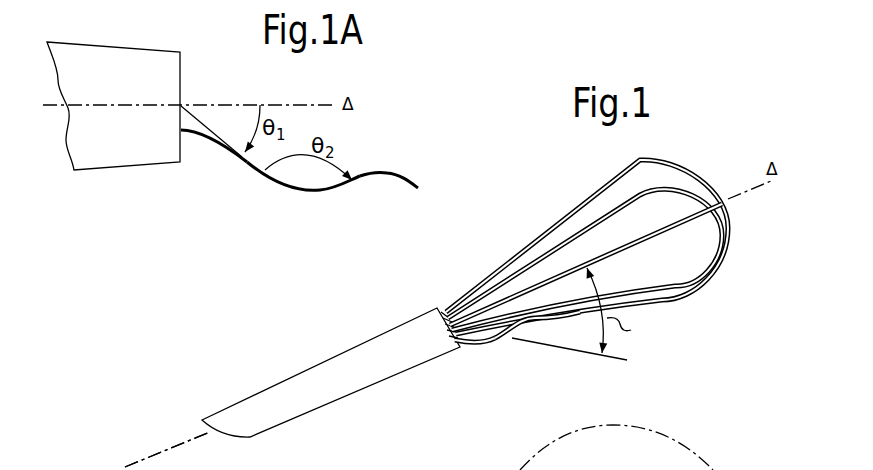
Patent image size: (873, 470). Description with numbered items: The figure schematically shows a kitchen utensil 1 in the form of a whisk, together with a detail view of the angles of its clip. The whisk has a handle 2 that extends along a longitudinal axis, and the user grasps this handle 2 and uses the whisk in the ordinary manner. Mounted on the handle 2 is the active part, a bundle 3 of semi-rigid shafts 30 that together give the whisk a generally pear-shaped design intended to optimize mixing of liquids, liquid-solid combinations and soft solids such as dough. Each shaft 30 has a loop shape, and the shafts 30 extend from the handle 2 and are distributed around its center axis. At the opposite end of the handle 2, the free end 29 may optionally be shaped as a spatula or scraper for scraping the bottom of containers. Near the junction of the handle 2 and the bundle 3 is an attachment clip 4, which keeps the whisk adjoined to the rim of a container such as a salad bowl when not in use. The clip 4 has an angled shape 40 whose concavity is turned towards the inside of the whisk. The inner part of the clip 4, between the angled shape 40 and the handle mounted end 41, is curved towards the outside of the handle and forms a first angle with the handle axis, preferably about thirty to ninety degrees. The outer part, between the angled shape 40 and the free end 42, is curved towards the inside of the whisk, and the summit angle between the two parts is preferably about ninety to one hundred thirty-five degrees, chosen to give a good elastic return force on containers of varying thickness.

In FIG. 1, the kitchen utensil 1 is at (455, 250).
In FIG. 1A, the handle 2 is at (164, 45).
In FIG. 1, the handle 2 is at (267, 375).
In FIG. 1, the bundle of shafts 3 is at (587, 215).
In FIG. 1, the attachment clip 4 is at (514, 359).
In FIG. 1, the free end of the handle 29 is at (190, 425).
In FIG. 1, the shafts 30 is at (566, 217).
In FIG. 1A, the angled shape 40 is at (295, 191).
In FIG. 1, the angled shape 40 is at (505, 340).
In FIG. 1A, the handle mounted end 41 is at (183, 131).
In FIG. 1, the handle mounted end 41 is at (455, 347).
In FIG. 1A, the free end of the clip 42 is at (390, 172).
In FIG. 1, the free end of the clip 42 is at (540, 322).